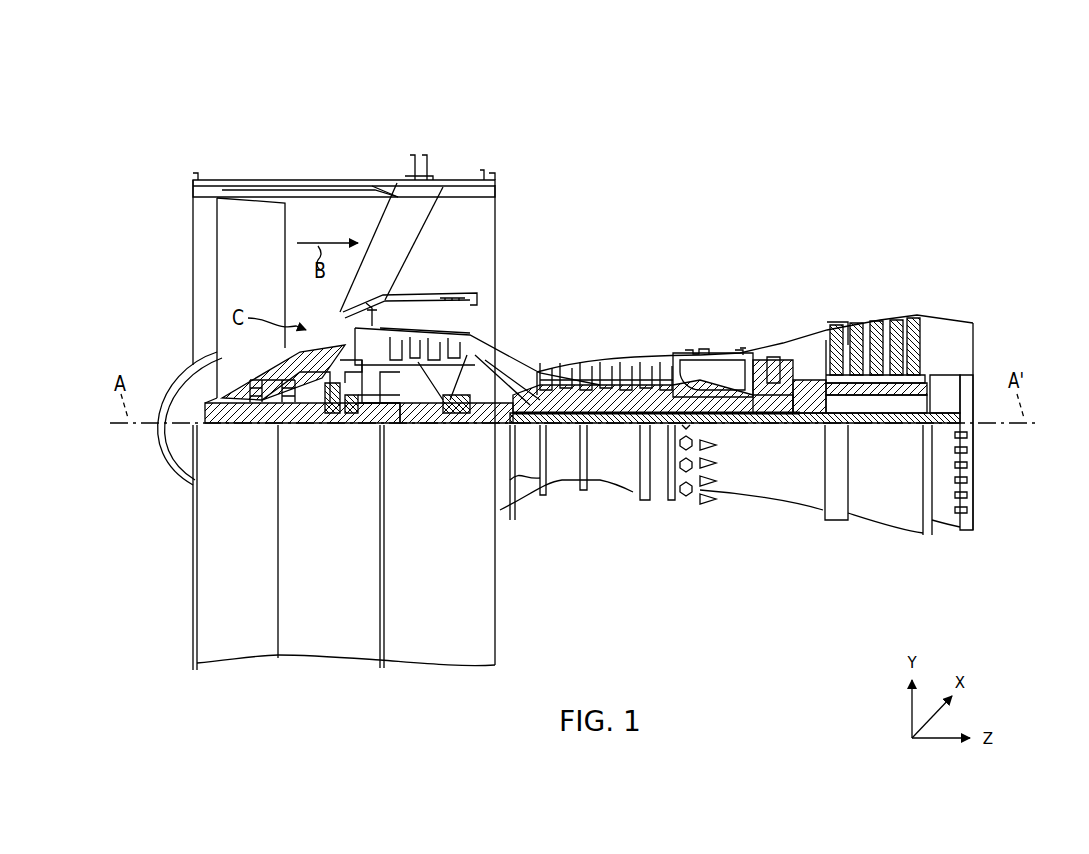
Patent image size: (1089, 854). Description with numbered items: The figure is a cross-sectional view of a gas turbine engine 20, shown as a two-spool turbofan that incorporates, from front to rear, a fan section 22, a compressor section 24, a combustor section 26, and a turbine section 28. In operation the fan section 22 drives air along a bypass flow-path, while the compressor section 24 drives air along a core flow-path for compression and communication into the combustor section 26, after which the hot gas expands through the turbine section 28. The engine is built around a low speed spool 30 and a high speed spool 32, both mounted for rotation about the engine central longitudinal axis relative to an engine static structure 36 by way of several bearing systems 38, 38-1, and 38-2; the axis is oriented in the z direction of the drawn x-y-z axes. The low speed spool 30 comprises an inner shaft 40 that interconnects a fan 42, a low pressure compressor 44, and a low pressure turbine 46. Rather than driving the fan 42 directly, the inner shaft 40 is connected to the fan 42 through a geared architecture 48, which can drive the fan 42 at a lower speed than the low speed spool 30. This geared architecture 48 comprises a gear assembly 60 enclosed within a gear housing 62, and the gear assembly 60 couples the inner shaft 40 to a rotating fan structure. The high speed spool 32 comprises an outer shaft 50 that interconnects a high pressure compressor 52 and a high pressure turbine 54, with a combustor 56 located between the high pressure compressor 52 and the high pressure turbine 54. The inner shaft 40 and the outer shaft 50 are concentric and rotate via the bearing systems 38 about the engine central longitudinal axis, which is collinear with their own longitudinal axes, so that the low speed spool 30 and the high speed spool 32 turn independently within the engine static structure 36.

The gas turbine engine 20 is at (758, 208).
The fan section 22 is at (378, 165).
The compressor section 24 is at (383, 268).
The combustor section 26 is at (676, 268).
The turbine section 28 is at (930, 268).
The low speed spool 30 is at (628, 432).
The high speed spool 32 is at (655, 398).
The engine static structure 36 is at (325, 645).
The bearing system 38 is at (808, 412).
The bearing system 38-1 is at (257, 405).
The bearing system 38-2 is at (452, 415).
The inner shaft 40 is at (512, 428).
The fan 42 is at (237, 278).
The low pressure compressor 44 is at (455, 333).
The low pressure turbine 46 is at (878, 330).
The geared architecture 48 is at (350, 433).
The outer shaft 50 is at (715, 412).
The high pressure compressor 52 is at (608, 392).
The high pressure turbine 54 is at (773, 355).
The combustor 56 is at (715, 380).
The gear assembly 60 is at (368, 405).
The gear housing 62 is at (355, 378).